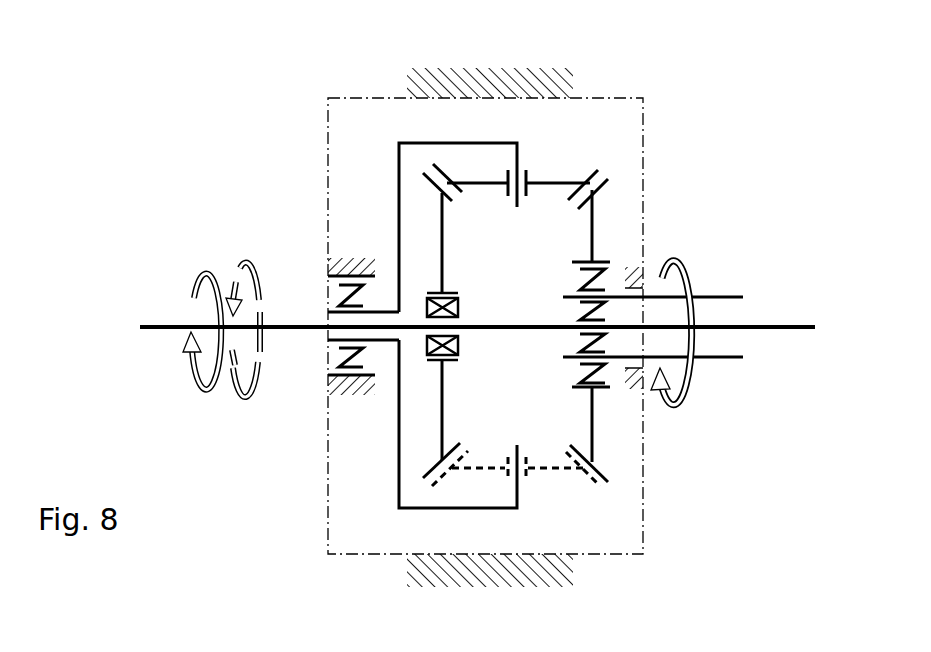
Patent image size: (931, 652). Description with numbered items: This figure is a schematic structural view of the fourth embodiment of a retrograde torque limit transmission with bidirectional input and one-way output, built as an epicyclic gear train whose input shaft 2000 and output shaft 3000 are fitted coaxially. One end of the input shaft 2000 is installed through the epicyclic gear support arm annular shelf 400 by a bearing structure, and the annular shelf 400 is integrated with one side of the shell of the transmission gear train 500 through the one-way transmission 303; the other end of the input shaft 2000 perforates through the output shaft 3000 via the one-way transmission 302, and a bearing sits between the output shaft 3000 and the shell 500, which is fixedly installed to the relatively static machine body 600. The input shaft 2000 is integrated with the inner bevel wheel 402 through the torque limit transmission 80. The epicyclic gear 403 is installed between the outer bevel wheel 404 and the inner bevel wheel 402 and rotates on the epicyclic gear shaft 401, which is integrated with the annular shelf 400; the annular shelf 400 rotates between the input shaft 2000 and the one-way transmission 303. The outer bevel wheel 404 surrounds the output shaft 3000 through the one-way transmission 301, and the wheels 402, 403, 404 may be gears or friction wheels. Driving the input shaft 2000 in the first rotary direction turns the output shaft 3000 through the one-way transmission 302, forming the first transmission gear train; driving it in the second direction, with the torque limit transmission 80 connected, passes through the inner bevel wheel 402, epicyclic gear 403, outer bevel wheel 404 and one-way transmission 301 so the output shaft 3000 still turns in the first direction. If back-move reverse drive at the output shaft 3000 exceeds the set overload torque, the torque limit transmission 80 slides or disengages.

The torque limit transmission 80 is at (458, 308).
The one-way transmission 301 is at (582, 272).
The one-way transmission 302 is at (583, 337).
The one-way transmission 303 is at (338, 295).
The epicyclic gear support arm annular shelf 400 is at (435, 508).
The epicyclic gear shaft 401 is at (519, 165).
The inner bevel wheel 402 is at (458, 445).
The epicyclic gear 403 is at (595, 172).
The outer bevel wheel 404 is at (607, 178).
The shell of the transmission gear train 500 is at (328, 177).
The machine body 600 is at (487, 88).
The input shaft 2000 is at (167, 322).
The output shaft 3000 is at (717, 297).